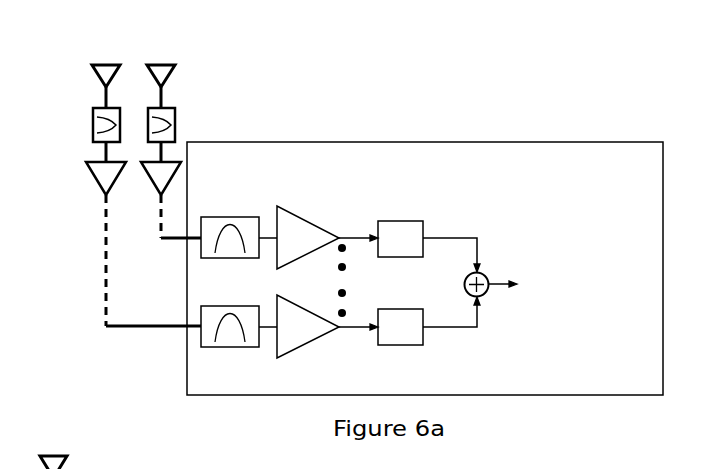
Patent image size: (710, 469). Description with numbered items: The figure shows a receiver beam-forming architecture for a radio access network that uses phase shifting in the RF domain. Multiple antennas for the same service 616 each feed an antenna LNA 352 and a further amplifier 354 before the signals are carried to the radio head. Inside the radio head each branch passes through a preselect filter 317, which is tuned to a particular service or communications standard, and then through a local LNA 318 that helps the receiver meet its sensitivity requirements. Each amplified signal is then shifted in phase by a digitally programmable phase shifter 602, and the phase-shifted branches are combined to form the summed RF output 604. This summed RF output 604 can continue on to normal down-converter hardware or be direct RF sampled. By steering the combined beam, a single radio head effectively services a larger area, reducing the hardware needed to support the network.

The multiple antennas for the same service 616 is at (151, 58).
The LNA 352 is at (86, 125).
The low noise amplifier 354 is at (79, 180).
The preselect filter 317 is at (229, 267).
The LNA 318 is at (304, 210).
The digitally programmable phase shifter 602 is at (411, 212).
The summed RF output 604 is at (504, 267).